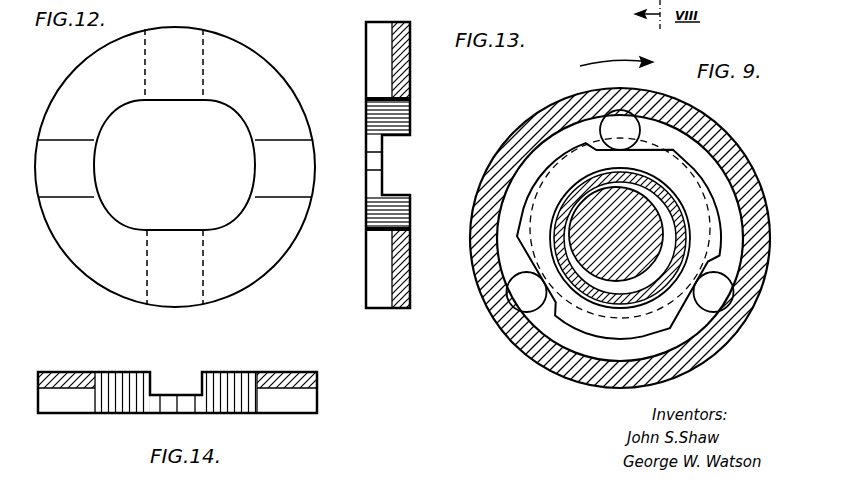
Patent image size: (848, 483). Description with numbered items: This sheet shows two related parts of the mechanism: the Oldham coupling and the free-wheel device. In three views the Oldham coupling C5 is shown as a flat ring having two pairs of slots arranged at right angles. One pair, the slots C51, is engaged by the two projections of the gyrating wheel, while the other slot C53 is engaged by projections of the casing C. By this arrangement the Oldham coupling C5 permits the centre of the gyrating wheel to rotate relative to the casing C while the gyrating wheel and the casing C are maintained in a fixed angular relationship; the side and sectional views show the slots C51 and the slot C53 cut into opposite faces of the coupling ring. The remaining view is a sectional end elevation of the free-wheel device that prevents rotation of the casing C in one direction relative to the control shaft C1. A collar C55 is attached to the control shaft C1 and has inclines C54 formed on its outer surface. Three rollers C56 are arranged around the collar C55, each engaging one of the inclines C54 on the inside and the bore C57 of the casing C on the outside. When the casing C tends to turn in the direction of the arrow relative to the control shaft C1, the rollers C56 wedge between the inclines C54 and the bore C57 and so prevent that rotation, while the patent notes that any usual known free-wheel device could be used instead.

In FIG. 9, the casing C is at (730, 153).
In FIG. 9, the control shaft C1 is at (650, 248).
In FIG. 12, the Oldham coupling C5 is at (92, 262).
In FIG. 13, the Oldham coupling C5 is at (404, 263).
In FIG. 14, the Oldham coupling C5 is at (228, 397).
In FIG. 12, the slots C51 is at (253, 300).
In FIG. 13, the slots C51 is at (376, 63).
In FIG. 14, the slots C51 is at (195, 392).
In FIG. 12, the slot C53 is at (298, 185).
In FIG. 13, the slot C53 is at (386, 190).
In FIG. 14, the slot C53 is at (70, 400).
In FIG. 9, the inclines C54 is at (692, 318).
In FIG. 9, the collar C55 is at (678, 207).
In FIG. 9, the rollers C56 is at (757, 318).
In FIG. 9, the bore C57 is at (640, 363).